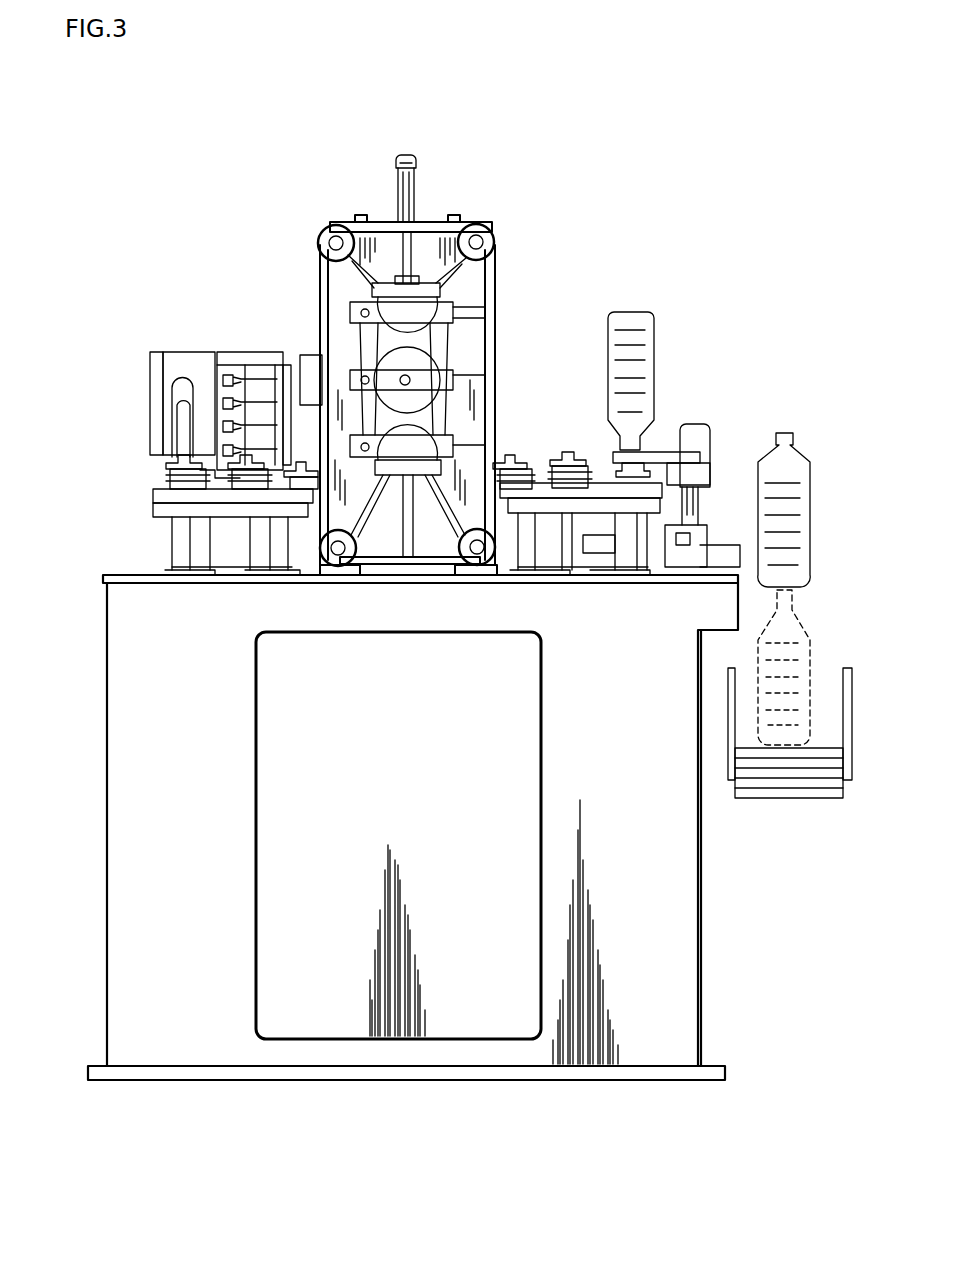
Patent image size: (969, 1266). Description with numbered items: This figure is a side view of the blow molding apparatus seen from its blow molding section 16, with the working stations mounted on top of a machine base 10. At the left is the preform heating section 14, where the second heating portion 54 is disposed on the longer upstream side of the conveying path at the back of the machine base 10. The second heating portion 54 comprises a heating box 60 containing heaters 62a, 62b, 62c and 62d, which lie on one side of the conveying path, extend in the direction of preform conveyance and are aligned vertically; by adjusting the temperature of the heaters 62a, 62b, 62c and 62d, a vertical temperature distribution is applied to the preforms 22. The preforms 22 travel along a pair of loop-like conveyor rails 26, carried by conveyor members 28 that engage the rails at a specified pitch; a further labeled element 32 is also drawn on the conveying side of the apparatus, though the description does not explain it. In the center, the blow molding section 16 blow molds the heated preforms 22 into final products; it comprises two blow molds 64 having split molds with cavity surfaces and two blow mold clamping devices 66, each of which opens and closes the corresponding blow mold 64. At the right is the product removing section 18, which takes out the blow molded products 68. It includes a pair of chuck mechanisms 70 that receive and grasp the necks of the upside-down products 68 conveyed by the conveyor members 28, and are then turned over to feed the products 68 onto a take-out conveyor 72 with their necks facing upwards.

The machine base 10 is at (125, 575).
The preform heating section 14 is at (165, 346).
The blow molding section 16 is at (442, 333).
The product removing section 18 is at (718, 430).
The preform 22 is at (178, 412).
The conveyor rail 26 is at (152, 493).
The conveyor member 28 is at (577, 452).
The mandrel 32 is at (540, 460).
The second heating portion 54 is at (160, 321).
The heating box 60 is at (227, 352).
The heater 62a is at (248, 355).
The heater 62b is at (258, 355).
The heater 62c is at (268, 355).
The heater 62d is at (276, 355).
The blow mold 64 is at (473, 285).
The blow mold clamping device 66 is at (478, 228).
The product 68 is at (645, 340).
The chuck mechanism 70 is at (648, 450).
The take-out conveyor 72 is at (805, 800).